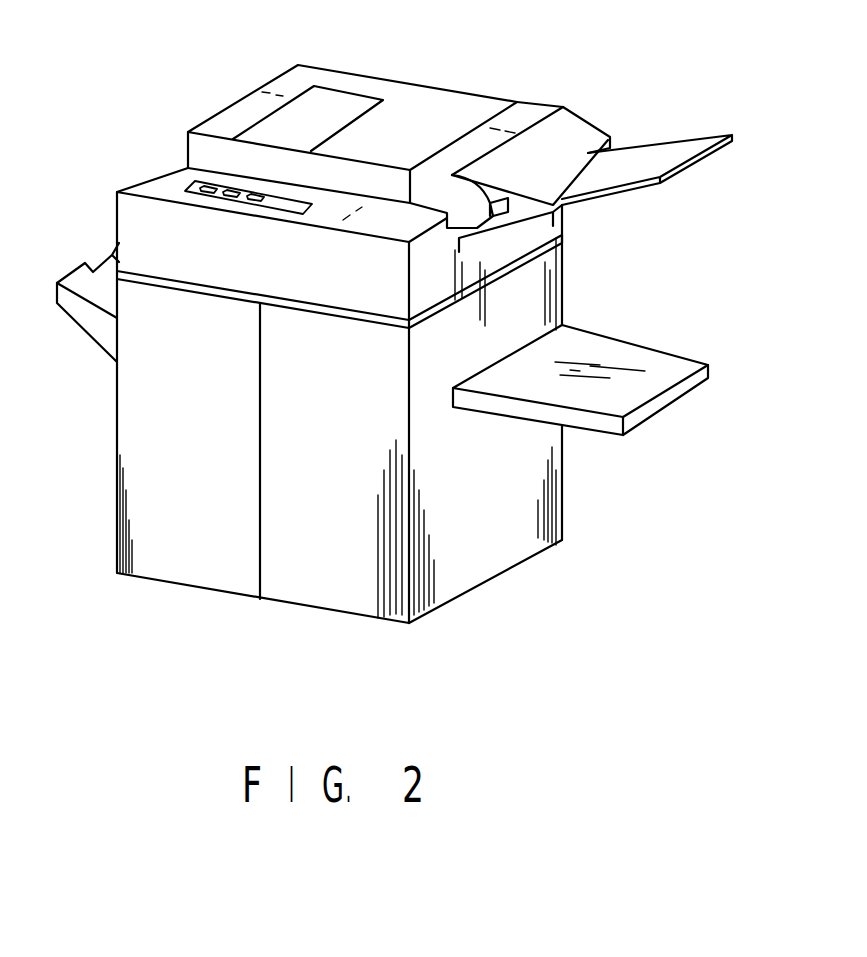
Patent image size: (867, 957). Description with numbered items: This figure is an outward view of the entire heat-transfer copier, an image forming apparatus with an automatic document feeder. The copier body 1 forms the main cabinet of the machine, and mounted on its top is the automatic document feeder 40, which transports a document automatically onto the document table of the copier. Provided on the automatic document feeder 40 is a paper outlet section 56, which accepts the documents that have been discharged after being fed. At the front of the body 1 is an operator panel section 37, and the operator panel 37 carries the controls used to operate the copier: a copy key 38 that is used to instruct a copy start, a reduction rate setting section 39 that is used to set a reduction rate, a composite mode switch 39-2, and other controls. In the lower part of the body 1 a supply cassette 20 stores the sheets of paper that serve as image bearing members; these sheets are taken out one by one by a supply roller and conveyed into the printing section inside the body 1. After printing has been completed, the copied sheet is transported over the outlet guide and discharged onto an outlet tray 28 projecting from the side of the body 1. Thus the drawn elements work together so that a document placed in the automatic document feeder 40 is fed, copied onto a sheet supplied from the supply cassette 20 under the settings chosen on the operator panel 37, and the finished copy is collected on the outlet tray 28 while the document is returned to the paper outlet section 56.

The copier body 1 is at (124, 480).
The supply cassette 20 is at (652, 410).
The outlet tray 28 is at (82, 327).
The operator panel section 37 is at (212, 201).
The copy key 38 is at (205, 190).
The reduction rate setting section 39 is at (229, 204).
The composite mode switch 39-2 is at (276, 218).
The automatic document feeder 40 is at (520, 120).
The paper outlet section 56 is at (335, 107).